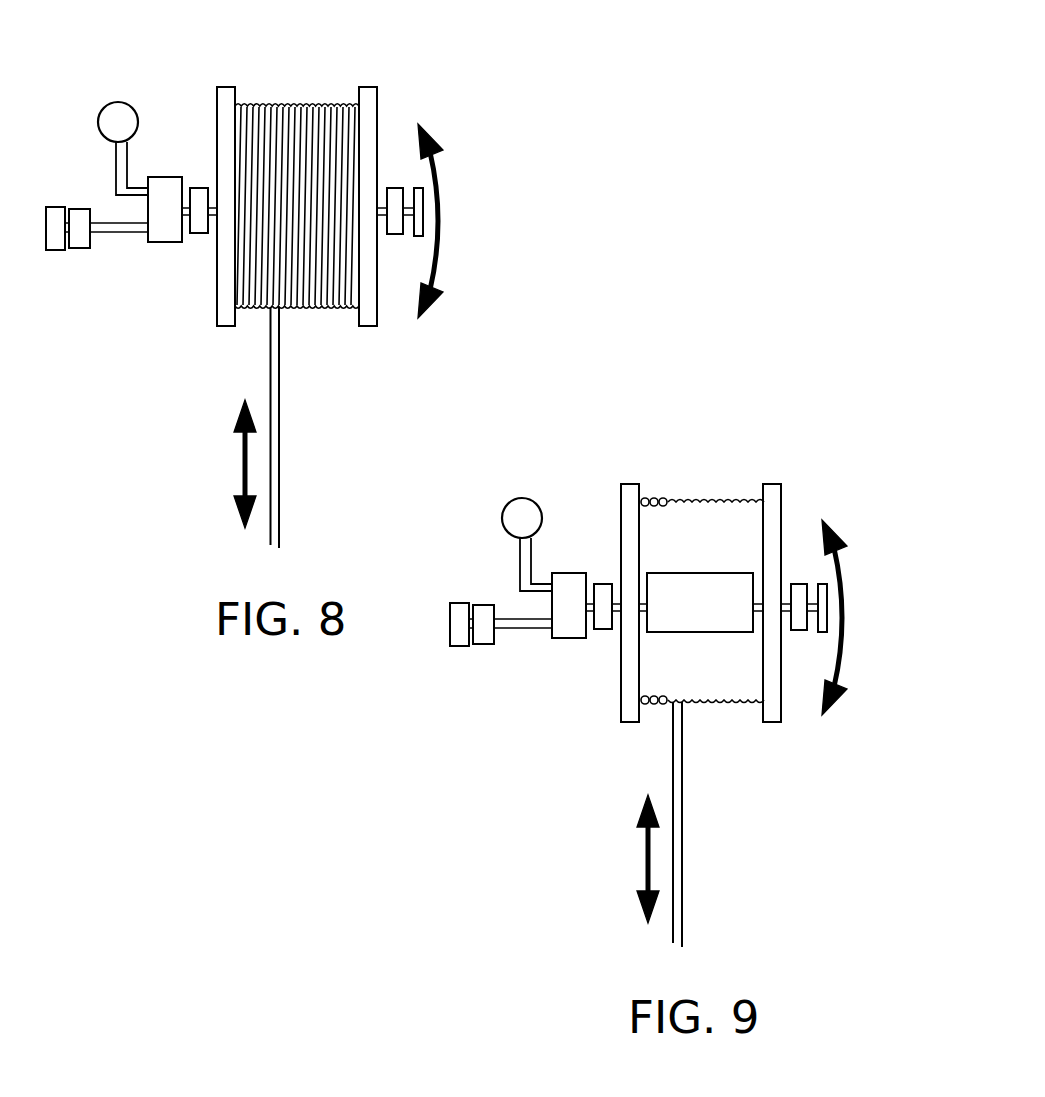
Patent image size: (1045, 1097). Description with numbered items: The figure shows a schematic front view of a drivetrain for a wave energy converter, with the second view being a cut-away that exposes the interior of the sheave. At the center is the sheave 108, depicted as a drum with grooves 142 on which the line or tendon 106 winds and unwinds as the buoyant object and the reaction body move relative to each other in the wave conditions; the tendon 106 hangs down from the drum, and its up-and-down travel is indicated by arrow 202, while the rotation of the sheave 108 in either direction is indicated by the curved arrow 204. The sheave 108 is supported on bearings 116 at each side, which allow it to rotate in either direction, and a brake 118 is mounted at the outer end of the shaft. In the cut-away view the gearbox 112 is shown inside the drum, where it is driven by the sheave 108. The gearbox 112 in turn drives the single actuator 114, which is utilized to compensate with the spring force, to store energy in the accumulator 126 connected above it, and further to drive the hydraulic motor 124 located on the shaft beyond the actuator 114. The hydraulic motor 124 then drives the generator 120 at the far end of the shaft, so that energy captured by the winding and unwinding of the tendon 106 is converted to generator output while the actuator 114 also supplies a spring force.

In FIG. 8, the line or tendon 106 is at (265, 104).
In FIG. 9, the line or tendon 106 is at (670, 502).
In FIG. 8, the sheave 108 is at (372, 97).
In FIG. 9, the sheave 108 is at (777, 497).
In FIG. 9, the gearbox 112 is at (703, 573).
In FIG. 8, the actuator 114 is at (160, 190).
In FIG. 9, the actuator 114 is at (567, 587).
In FIG. 8, the bearing 116 is at (196, 200).
In FIG. 9, the bearing 116 is at (602, 592).
In FIG. 8, the brake 118 is at (420, 237).
In FIG. 9, the brake 118 is at (822, 633).
In FIG. 8, the generator 120 is at (53, 242).
In FIG. 9, the generator 120 is at (457, 639).
In FIG. 8, the hydraulic motor 124 is at (82, 240).
In FIG. 9, the hydraulic motor 124 is at (488, 637).
In FIG. 8, the accumulator 126 is at (98, 117).
In FIG. 9, the accumulator 126 is at (502, 508).
In FIG. 8, the grooves 142 is at (325, 305).
In FIG. 9, the grooves 142 is at (731, 701).
In FIG. 8, the linear movement direction 202 is at (240, 472).
In FIG. 9, the linear movement direction 202 is at (642, 868).
In FIG. 8, the rotation direction 204 is at (437, 142).
In FIG. 9, the rotation direction 204 is at (837, 538).